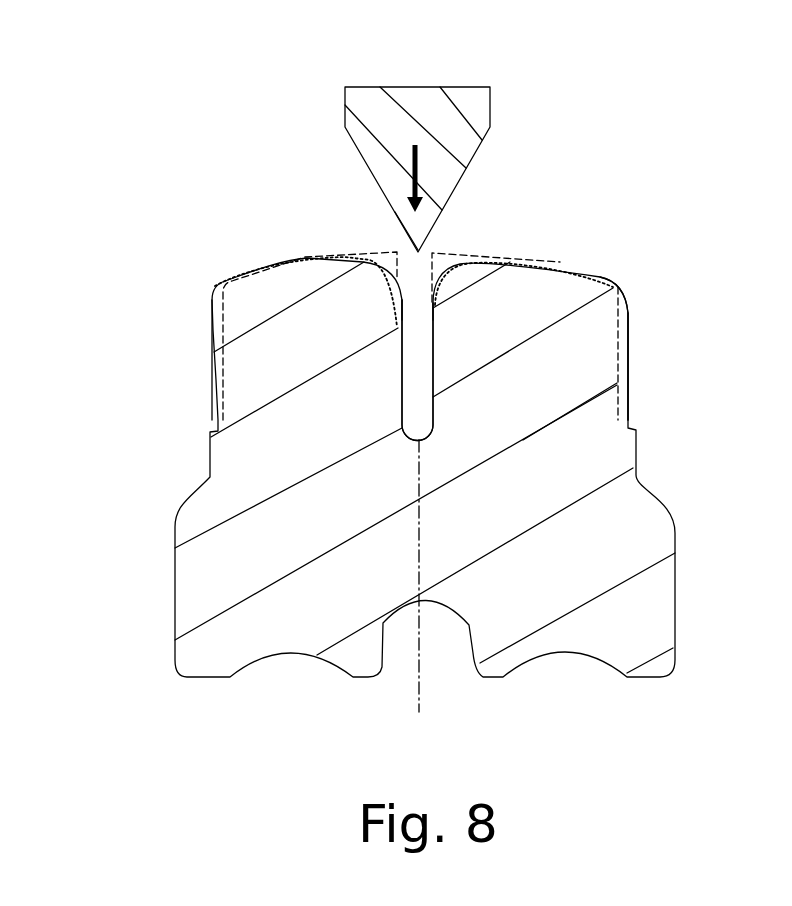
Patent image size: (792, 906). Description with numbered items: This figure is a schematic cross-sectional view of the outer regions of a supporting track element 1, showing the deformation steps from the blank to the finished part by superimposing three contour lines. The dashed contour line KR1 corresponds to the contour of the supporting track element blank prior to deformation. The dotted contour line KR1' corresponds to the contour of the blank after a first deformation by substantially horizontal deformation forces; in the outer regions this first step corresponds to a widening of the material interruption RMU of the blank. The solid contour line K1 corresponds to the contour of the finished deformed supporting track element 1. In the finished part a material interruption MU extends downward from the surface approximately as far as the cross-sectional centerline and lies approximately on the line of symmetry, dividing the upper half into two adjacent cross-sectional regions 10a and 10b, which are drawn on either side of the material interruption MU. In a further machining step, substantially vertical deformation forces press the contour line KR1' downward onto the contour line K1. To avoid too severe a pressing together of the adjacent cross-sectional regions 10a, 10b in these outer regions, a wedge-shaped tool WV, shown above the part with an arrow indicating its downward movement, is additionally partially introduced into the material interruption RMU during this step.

The supporting track element 1 is at (589, 226).
The cross-sectional region 10a is at (260, 298).
The cross-sectional region 10b is at (580, 348).
The contour line K1 is at (628, 313).
The contour line KR1 is at (420, 305).
The contour line KR1' is at (356, 310).
The material interruption MU is at (418, 390).
The material interruption of the blank RMU is at (408, 262).
The wedge-shaped tool WV is at (422, 117).